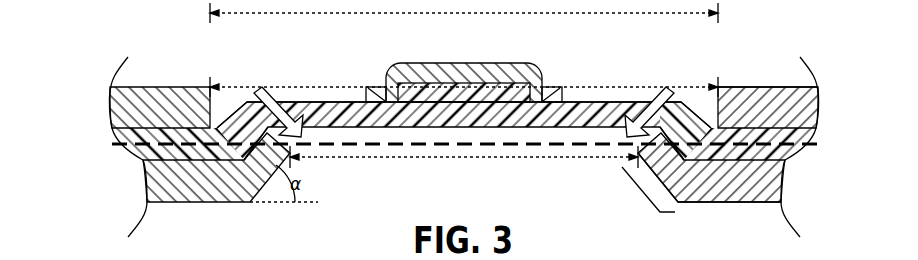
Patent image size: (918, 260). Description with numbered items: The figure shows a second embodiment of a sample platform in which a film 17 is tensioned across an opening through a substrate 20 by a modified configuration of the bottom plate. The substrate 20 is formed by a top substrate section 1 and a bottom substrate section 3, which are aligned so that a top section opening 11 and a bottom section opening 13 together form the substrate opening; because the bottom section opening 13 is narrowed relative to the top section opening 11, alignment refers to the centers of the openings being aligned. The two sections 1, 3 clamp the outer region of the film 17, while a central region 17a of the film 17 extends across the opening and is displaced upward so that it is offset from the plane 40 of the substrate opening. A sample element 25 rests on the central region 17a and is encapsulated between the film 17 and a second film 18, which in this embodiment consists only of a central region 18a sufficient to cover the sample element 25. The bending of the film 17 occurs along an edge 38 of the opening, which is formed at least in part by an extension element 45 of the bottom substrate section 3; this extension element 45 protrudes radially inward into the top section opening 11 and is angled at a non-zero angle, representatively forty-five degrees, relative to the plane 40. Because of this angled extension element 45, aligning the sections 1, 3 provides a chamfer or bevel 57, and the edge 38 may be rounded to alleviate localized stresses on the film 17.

The top substrate section 1 is at (750, 86).
The bottom substrate section 3 is at (733, 203).
The top section opening 11 is at (593, 86).
The bottom section opening 13 is at (435, 159).
The film 17 is at (598, 105).
The central region of film 17a is at (468, 96).
The second film 18 is at (371, 88).
The central region of second film 18a is at (457, 67).
The substrate 20 is at (169, 120).
The sample element 25 is at (500, 82).
The edge 38 is at (262, 118).
The plane of substrate opening 40 is at (398, 146).
The extension element 45 is at (638, 188).
The chamfer 57 is at (285, 100).